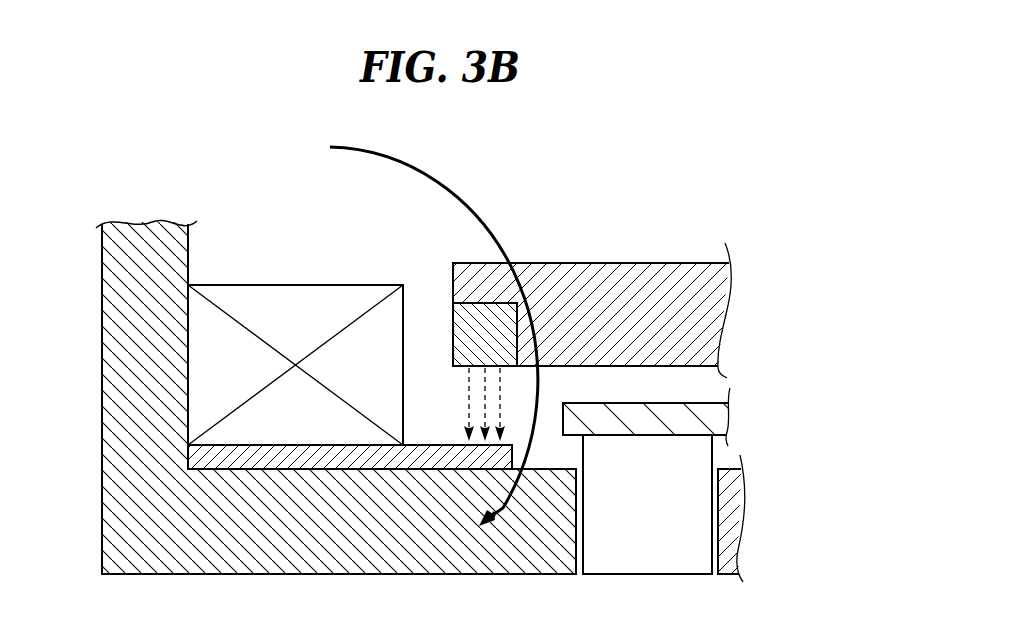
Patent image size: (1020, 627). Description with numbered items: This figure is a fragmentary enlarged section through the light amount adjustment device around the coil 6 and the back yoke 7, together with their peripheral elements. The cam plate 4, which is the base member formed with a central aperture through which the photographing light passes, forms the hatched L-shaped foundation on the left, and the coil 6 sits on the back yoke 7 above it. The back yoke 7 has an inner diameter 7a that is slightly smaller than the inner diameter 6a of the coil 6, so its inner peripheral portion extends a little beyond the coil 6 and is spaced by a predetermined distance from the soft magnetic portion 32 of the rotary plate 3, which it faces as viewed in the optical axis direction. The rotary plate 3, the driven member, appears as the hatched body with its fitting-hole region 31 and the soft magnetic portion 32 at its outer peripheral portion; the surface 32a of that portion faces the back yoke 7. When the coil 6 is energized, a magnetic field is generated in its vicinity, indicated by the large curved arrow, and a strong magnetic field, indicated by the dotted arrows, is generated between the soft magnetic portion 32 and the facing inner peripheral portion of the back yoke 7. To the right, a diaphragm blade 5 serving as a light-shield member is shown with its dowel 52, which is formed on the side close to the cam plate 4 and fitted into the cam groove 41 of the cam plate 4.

The rotary plate 3 is at (613, 413).
The fitting hole portion of rotary plate 31 is at (641, 272).
The soft magnetic portion 32 is at (453, 320).
The surface of soft magnetic portion 32a is at (448, 346).
The cam plate 4 is at (138, 575).
The cam groove 41 is at (717, 518).
The diaphragm blade 5 is at (718, 413).
The dowel 52 is at (643, 553).
The coil 6 is at (272, 308).
The inner diameter of coil 6a is at (404, 392).
The back yoke 7 is at (283, 458).
The inner diameter of back yoke 7a is at (514, 455).